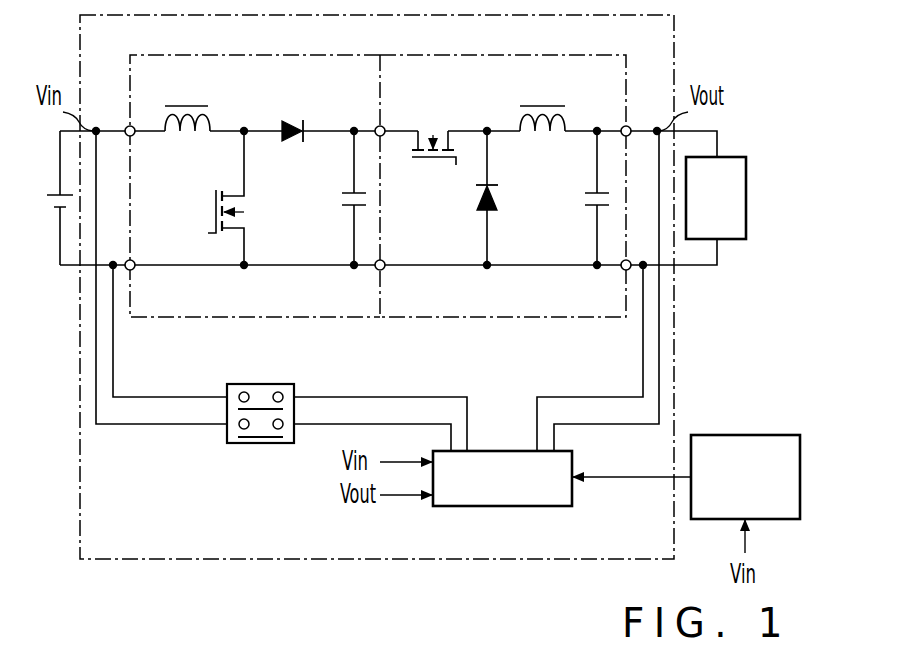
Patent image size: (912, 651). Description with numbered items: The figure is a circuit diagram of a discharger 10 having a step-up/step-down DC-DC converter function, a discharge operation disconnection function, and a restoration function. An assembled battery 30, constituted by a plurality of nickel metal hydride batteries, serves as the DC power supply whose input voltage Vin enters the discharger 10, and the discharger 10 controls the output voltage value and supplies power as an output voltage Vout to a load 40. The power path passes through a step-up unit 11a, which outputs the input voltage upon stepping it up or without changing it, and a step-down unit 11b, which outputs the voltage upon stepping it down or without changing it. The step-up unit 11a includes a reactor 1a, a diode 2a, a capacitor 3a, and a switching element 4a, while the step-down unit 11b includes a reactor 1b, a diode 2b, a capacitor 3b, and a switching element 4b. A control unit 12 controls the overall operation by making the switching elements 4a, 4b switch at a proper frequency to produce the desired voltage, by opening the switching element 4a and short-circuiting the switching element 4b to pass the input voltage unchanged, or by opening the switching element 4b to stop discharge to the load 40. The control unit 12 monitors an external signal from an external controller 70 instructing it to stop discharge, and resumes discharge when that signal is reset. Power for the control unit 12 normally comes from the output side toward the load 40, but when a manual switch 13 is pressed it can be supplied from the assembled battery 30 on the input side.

The reactor 1a is at (182, 106).
The reactor 1b is at (547, 106).
The diode 2a is at (292, 121).
The diode 2b is at (485, 215).
The capacitor 3a is at (352, 206).
The capacitor 3b is at (588, 208).
The switching element 4a is at (210, 216).
The switching element 4b is at (432, 168).
The discharger 10 is at (80, 489).
The step-up unit 11a is at (228, 55).
The step-down unit 11b is at (438, 55).
The control unit 12 is at (462, 507).
The manual switch 13 is at (273, 446).
The assembled battery 30 is at (50, 194).
The load 40 is at (727, 157).
The controller 70 is at (730, 435).